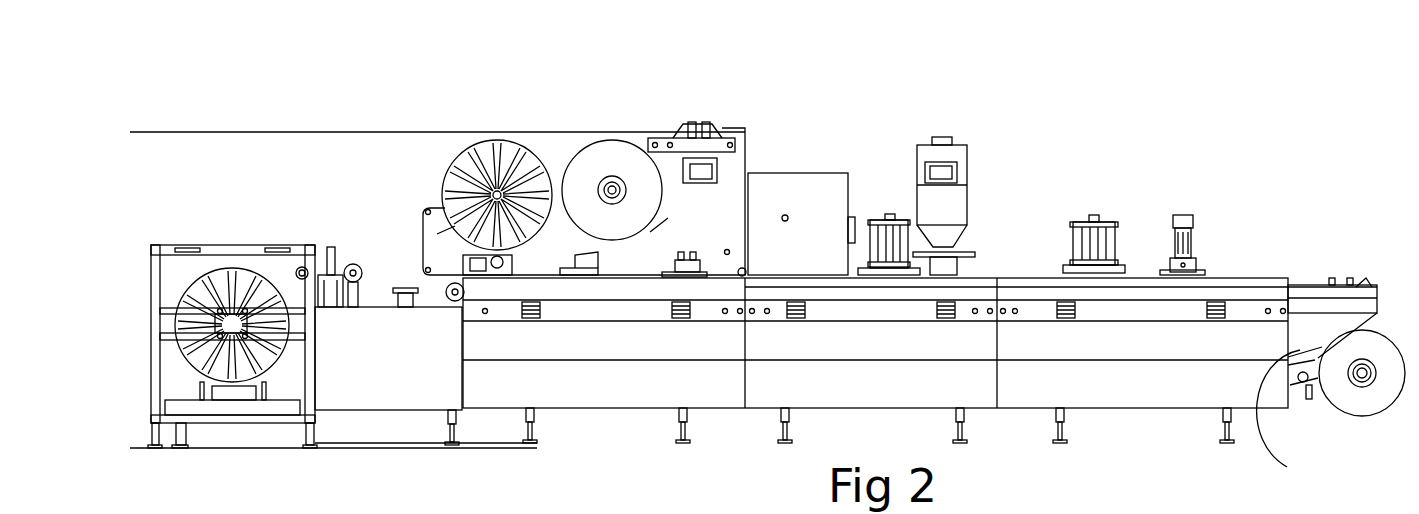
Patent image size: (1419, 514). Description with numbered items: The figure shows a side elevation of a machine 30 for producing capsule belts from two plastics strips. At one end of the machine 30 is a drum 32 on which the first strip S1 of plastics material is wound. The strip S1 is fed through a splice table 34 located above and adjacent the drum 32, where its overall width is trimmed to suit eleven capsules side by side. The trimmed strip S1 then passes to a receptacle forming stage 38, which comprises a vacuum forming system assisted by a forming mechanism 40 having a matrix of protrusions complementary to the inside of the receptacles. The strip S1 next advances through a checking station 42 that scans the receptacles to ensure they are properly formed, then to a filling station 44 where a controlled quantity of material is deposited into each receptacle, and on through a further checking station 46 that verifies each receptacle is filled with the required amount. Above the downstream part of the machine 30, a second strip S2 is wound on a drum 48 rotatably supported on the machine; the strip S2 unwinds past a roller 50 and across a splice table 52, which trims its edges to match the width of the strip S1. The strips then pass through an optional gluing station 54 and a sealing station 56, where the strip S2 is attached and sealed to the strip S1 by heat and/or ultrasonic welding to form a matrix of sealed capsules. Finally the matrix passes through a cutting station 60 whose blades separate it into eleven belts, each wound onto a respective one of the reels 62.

The machine 30 is at (872, 72).
The drum 32 is at (1360, 405).
The splice table 34 is at (1347, 268).
The receptacle forming stage 38 is at (1196, 262).
The forming mechanism 40 is at (1188, 214).
The checking station 42 is at (1095, 198).
The filling station 44 is at (947, 137).
The further checking station 46 is at (890, 218).
The drum 48 is at (610, 155).
The roller 50 is at (655, 137).
The splice table 52 is at (716, 100).
The gluing station 54 is at (822, 183).
The sealing station 56 is at (680, 278).
The cutting station 60 is at (348, 205).
The reels 62 is at (234, 258).
The first strip S1 is at (1303, 285).
The second strip S2 is at (676, 130).